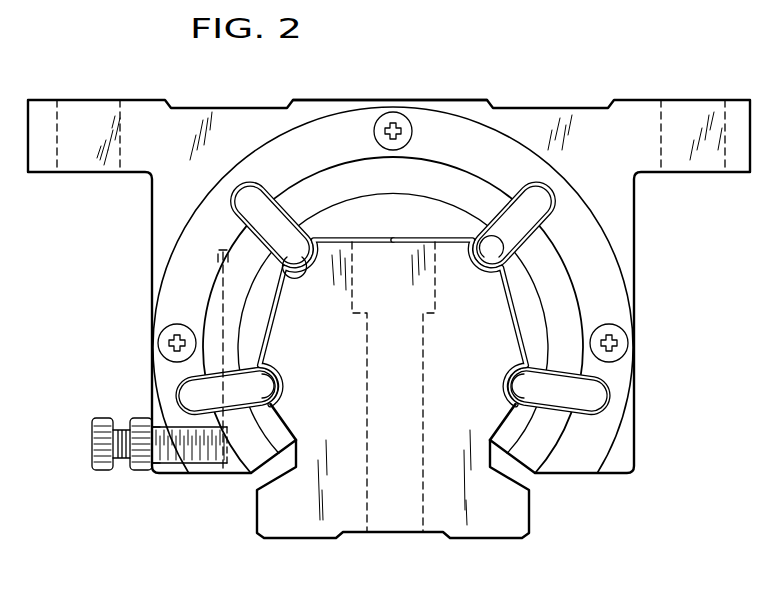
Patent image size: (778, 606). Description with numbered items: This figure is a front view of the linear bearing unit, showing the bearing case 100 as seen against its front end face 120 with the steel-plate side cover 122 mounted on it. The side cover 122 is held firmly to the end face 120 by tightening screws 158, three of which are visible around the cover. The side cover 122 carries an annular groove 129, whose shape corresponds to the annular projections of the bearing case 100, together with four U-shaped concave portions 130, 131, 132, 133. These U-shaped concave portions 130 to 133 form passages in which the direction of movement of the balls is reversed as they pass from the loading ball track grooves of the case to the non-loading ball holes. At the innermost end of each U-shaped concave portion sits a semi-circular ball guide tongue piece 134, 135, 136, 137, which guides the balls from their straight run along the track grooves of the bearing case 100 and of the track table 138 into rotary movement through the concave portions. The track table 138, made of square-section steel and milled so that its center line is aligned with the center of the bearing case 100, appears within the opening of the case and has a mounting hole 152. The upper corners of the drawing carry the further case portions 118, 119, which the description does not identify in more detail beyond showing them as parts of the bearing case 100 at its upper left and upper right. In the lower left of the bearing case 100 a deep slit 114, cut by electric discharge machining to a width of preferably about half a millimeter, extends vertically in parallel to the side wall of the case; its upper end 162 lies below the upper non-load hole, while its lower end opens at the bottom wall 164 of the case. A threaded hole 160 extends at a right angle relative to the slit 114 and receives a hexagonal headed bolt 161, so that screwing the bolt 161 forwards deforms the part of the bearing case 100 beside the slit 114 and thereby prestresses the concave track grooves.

The bearing case 100 is at (456, 95).
The deep slit 114 is at (226, 470).
The left mounting flange 118 is at (121, 118).
The right mounting flange 119 is at (720, 120).
The end face 120 is at (557, 116).
The side cover 122 is at (692, 262).
The annular groove 129 is at (570, 312).
The U-shaped concave portion 130 is at (268, 197).
The U-shaped concave portion 131 is at (550, 192).
The U-shaped concave portion 132 is at (178, 388).
The U-shaped concave portion 133 is at (605, 401).
The semi-circular ball guide tongue piece 134 is at (299, 268).
The semi-circular ball guide tongue piece 135 is at (485, 268).
The semi-circular ball guide tongue piece 136 is at (283, 383).
The semi-circular ball guide tongue piece 137 is at (503, 383).
The track table 138 is at (318, 526).
The mounting hole 152 is at (425, 505).
The tightening screw 158 is at (393, 123).
The threaded hole 160 is at (185, 463).
The hexagonal headed bolt 161 is at (100, 420).
The upper end of the slit 162 is at (222, 250).
The bottom wall 164 is at (197, 478).